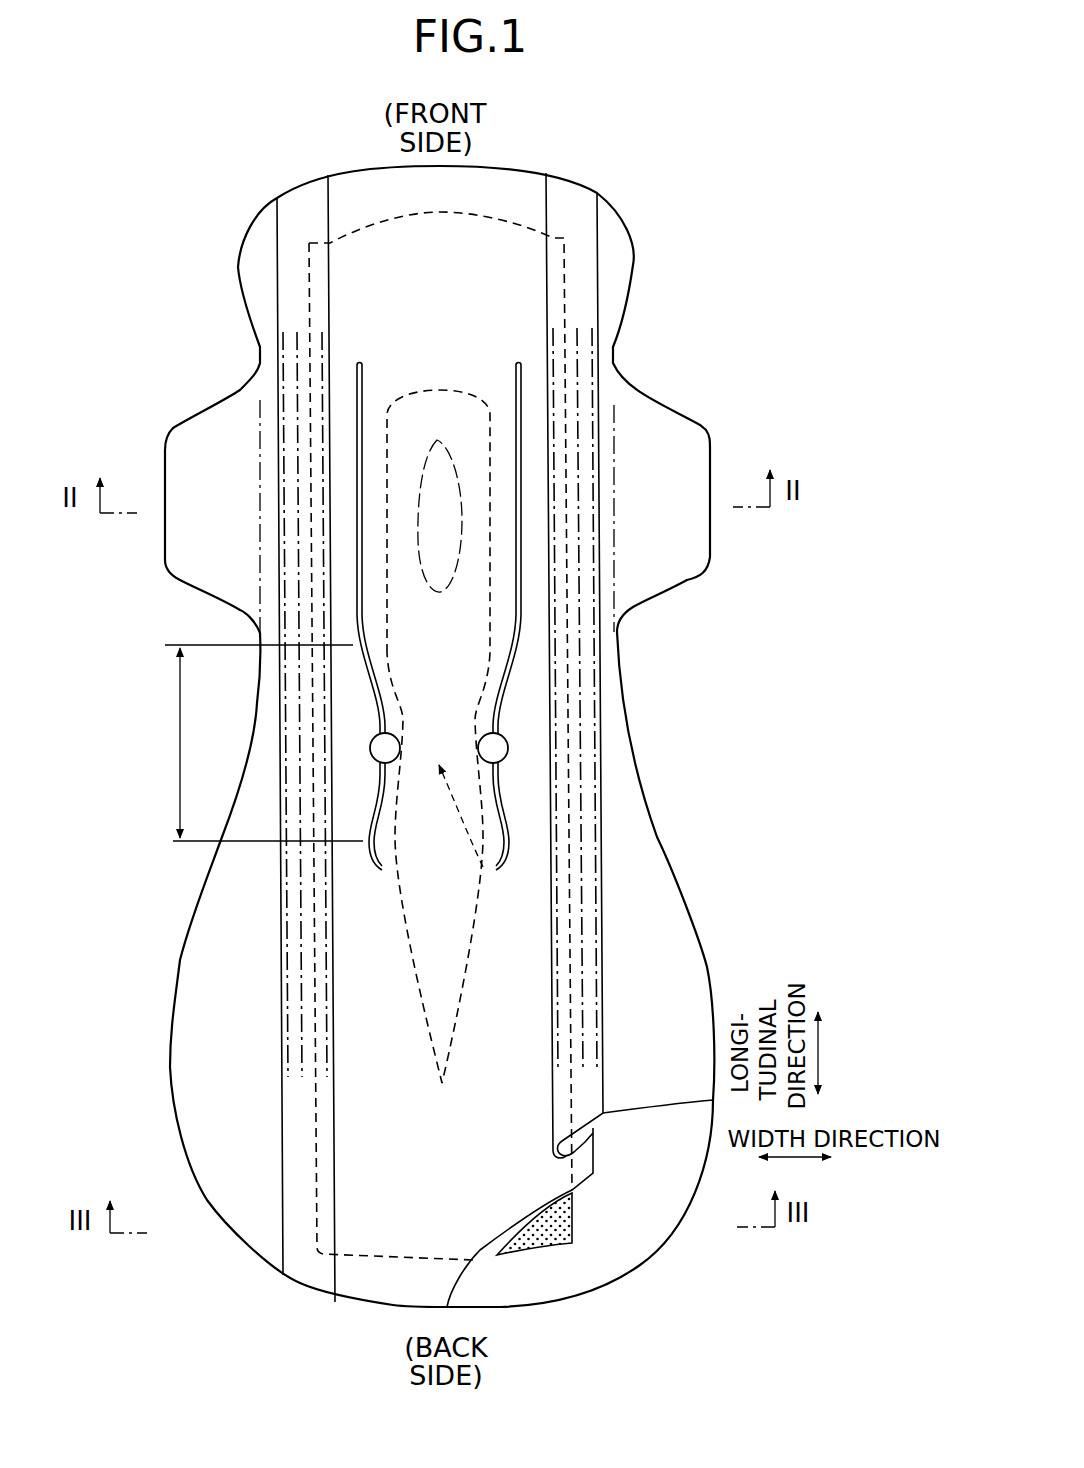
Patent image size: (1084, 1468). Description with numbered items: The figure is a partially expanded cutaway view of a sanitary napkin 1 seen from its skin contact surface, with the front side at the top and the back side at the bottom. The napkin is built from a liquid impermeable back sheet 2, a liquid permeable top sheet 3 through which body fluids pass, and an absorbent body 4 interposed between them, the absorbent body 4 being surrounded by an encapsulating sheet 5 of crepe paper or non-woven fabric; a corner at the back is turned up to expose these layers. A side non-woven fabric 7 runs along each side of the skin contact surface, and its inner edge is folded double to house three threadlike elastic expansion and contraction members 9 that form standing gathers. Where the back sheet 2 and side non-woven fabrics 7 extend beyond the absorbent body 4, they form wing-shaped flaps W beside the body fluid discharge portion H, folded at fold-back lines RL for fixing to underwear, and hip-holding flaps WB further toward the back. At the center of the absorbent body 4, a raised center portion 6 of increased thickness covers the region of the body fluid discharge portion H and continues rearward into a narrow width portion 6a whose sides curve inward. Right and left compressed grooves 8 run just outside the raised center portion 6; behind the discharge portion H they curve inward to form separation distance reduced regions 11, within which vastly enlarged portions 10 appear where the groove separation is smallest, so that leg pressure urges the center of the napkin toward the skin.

The sanitary napkin 1 is at (657, 221).
The liquid impermeable back sheet 2 is at (625, 1232).
The liquid permeable top sheet 3 is at (358, 1275).
The absorbent body 4 is at (560, 1243).
The encapsulating sheet 5 is at (488, 1243).
The raised center portion 6 is at (450, 390).
The narrow width portion 6a is at (483, 870).
The side non-woven fabric 7 is at (217, 960).
The compressed grooves 8 is at (358, 362).
The elastic expansion and contraction members 9 is at (320, 548).
The vastly enlarged portions 10 is at (367, 748).
The separation distance reduced regions 11 is at (253, 743).
The body fluid discharge portion H is at (427, 587).
The wing-shaped flaps W is at (172, 426).
The fold-back lines RL is at (260, 400).
The hip-holding flaps WB is at (777, 962).